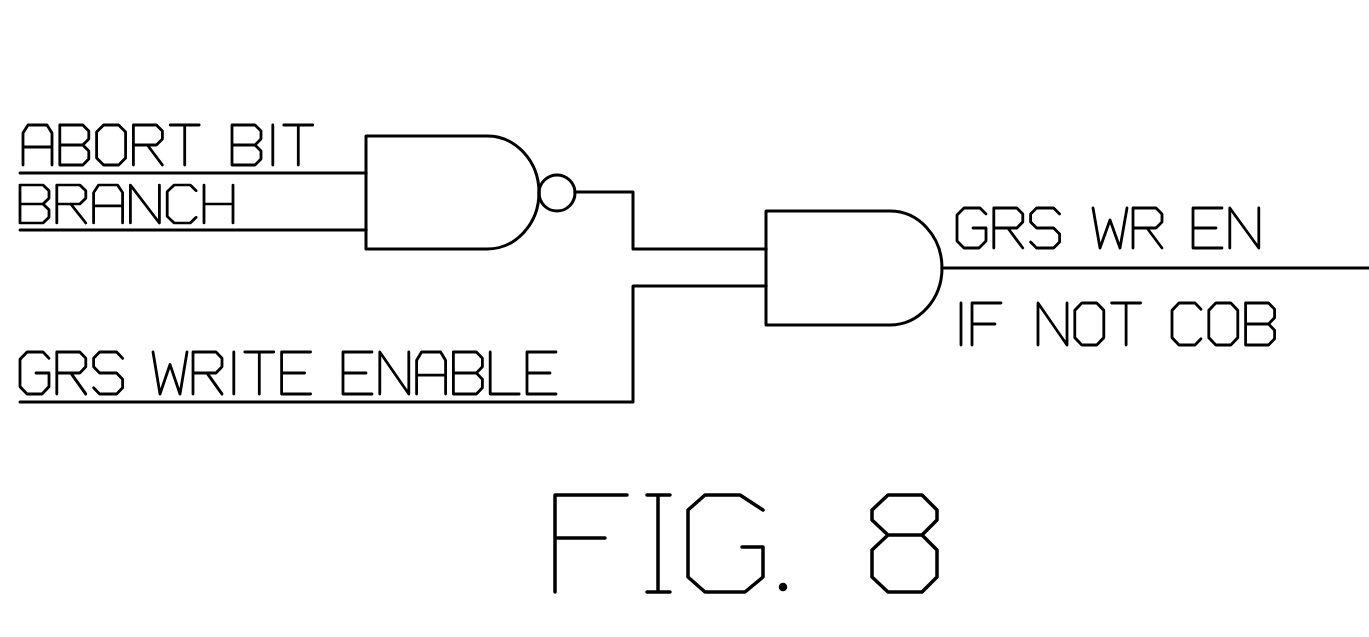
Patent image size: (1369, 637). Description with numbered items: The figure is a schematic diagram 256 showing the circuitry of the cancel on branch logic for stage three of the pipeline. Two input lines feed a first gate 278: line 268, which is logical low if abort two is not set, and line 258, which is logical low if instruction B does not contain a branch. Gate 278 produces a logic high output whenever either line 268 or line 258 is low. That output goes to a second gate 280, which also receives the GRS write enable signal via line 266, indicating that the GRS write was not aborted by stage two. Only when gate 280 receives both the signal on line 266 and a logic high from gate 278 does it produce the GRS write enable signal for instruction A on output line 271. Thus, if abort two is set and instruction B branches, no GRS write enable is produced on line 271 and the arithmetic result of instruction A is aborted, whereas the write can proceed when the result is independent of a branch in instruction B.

The schematic diagram 256 is at (882, 95).
The line 258 is at (278, 230).
The line 266 is at (573, 402).
The line 268 is at (326, 172).
The line 271 is at (1325, 266).
The gate 278 is at (440, 155).
The gate 280 is at (786, 304).